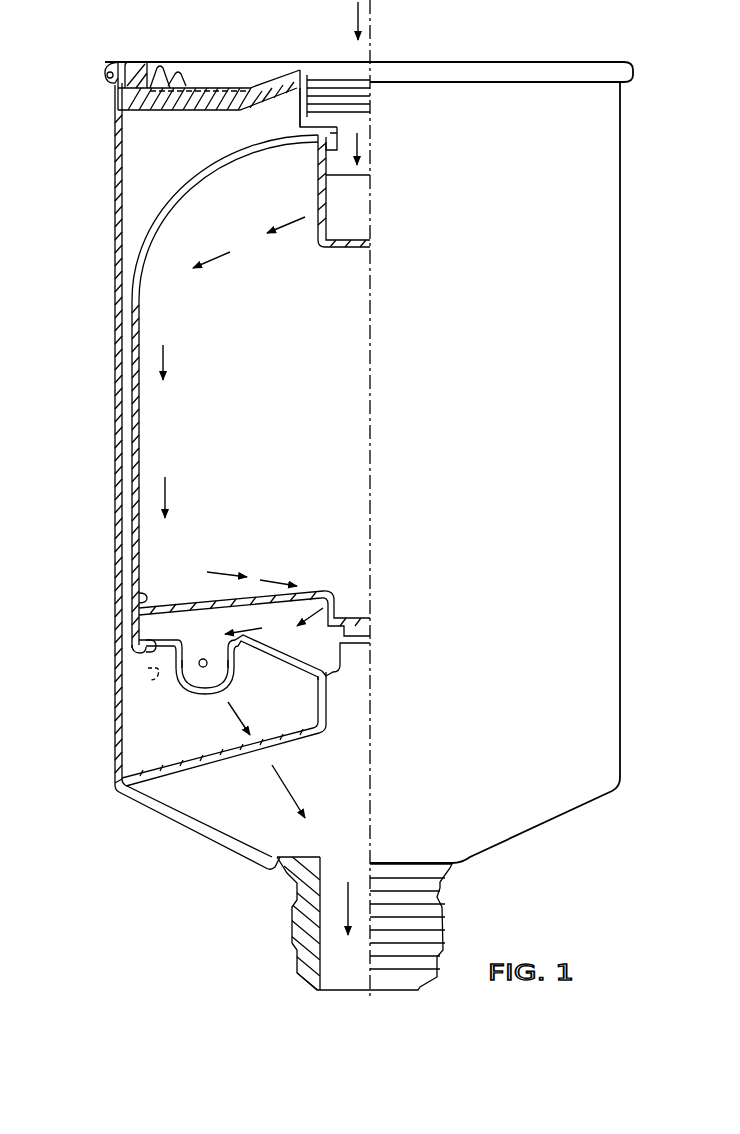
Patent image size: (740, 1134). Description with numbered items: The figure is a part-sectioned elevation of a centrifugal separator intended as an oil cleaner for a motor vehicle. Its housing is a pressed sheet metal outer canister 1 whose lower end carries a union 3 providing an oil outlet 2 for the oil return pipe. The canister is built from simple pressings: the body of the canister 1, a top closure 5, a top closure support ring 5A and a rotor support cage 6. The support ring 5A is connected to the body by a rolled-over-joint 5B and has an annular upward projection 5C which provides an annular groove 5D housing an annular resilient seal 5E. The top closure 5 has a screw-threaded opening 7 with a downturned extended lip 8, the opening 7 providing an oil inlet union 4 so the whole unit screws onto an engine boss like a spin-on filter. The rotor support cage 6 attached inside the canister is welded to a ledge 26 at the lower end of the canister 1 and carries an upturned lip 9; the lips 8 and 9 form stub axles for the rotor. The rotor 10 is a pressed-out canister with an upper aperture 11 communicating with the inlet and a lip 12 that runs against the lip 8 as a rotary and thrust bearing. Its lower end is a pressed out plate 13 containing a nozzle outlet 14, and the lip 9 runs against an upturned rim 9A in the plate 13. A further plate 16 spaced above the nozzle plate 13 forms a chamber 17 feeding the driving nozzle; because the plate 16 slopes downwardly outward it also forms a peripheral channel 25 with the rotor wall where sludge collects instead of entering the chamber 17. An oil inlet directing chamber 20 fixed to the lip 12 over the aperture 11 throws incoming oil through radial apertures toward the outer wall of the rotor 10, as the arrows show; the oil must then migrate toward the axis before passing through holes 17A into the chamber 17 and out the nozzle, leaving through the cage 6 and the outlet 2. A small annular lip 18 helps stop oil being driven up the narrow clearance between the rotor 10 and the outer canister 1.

The outer canister 1 is at (598, 298).
The oil outlet 2 is at (333, 957).
The union 3 is at (427, 895).
The oil inlet union 4 is at (347, 80).
The top closure 5 is at (207, 100).
The top closure support ring 5A is at (230, 86).
The rolled-over-joint 5B is at (107, 77).
The annular upward projection 5C is at (155, 70).
The annular groove 5D is at (124, 62).
The annular resilient seal 5E is at (137, 60).
The rotor support cage 6 is at (207, 760).
The screw-threaded opening 7 is at (295, 90).
The downturned extended lip 8 is at (312, 137).
The upturned lip 9 is at (330, 698).
The upturned rim 9A is at (330, 652).
The rotor 10 is at (140, 425).
The aperture 11 is at (345, 162).
The lip 12 is at (317, 148).
The pressed out plate 13 is at (175, 675).
The nozzle outlet 14 is at (233, 667).
The further plate 16 is at (190, 603).
The chamber 17 is at (234, 653).
The holes 17A is at (335, 603).
The small annular lip 18 is at (120, 687).
The oil inlet directing chamber 20 is at (353, 222).
The peripheral channel 25 is at (140, 597).
The ledge 26 is at (118, 790).